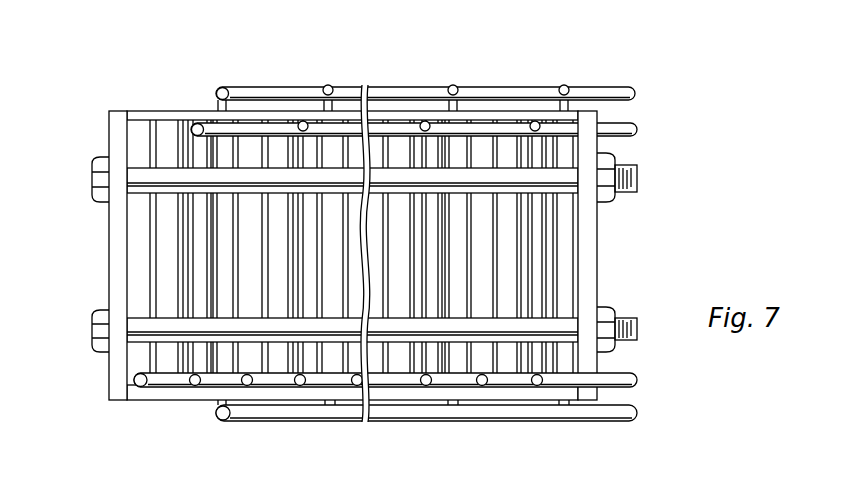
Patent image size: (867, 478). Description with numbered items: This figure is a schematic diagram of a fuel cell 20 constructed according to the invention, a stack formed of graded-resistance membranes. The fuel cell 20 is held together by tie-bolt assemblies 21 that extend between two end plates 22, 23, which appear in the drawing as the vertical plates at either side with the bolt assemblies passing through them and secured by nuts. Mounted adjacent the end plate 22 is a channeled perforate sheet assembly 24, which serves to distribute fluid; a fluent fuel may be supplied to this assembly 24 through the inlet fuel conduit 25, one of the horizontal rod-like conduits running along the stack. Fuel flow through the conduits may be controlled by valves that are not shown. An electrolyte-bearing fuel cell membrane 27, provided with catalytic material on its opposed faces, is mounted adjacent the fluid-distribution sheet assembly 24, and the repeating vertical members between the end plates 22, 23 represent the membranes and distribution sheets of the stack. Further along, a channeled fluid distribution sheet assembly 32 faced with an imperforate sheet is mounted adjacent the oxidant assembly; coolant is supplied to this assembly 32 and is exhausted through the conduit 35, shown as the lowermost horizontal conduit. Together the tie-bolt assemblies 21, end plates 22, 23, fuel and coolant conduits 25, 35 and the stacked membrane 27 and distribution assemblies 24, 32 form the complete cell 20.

The fuel cell 20 is at (385, 263).
The tie-bolt assemblies 21 is at (93, 175).
The end plate 22 is at (111, 244).
The end plate 23 is at (594, 234).
The channeled perforate sheet assembly 24 is at (143, 402).
The inlet fuel conduit 25 is at (180, 400).
The electrolyte-bearing fuel cell membrane 27 is at (196, 392).
The channeled fluid distribution sheet assembly 32 is at (224, 392).
The conduit 35 is at (417, 414).